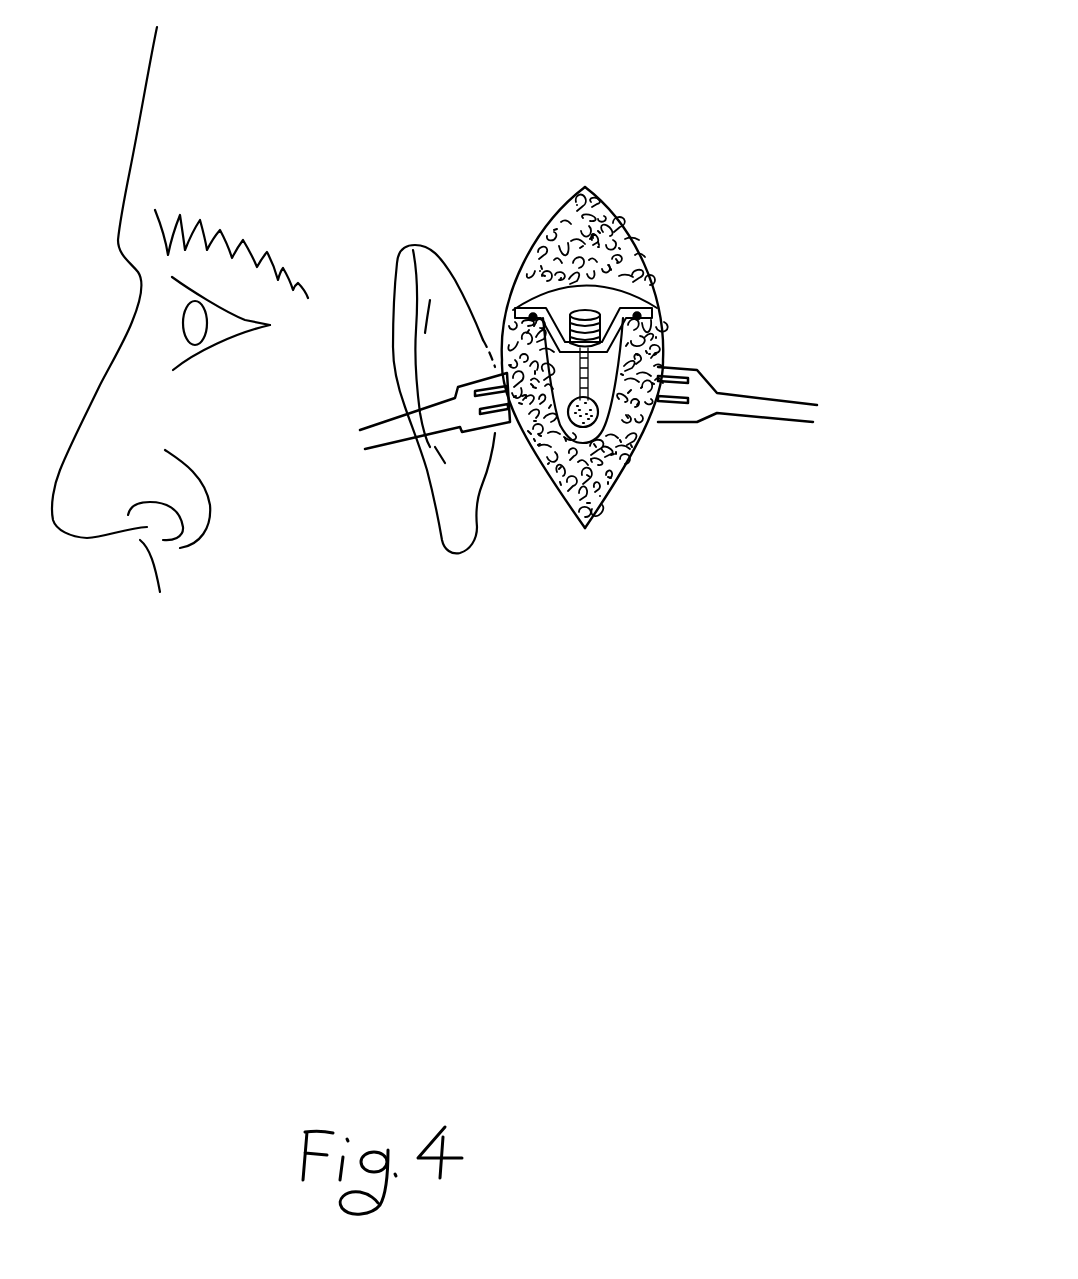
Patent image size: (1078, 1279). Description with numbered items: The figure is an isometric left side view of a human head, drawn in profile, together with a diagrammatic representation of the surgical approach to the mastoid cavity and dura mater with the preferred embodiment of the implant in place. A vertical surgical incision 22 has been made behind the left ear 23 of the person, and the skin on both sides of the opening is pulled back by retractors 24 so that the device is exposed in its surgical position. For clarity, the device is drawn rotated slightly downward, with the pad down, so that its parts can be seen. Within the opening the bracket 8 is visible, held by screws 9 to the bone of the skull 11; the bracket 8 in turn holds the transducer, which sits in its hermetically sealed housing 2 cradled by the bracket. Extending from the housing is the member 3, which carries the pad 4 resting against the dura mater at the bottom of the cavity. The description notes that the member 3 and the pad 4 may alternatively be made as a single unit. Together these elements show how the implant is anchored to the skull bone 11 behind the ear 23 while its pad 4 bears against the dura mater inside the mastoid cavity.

The hermetically sealed housing 2 is at (594, 306).
The member 3 is at (600, 413).
The pad 4 is at (588, 433).
The bracket 8 is at (612, 333).
The screws 9 is at (516, 309).
The bone of the skull 11 is at (594, 222).
The vertical surgical incision 22 is at (580, 531).
The left ear 23 is at (458, 532).
The retractors 24 is at (383, 447).